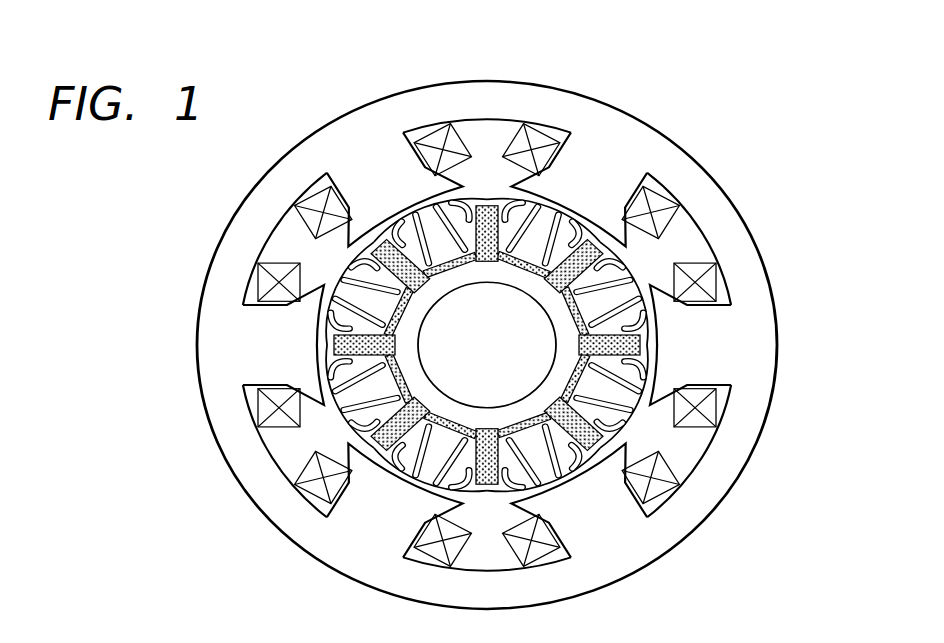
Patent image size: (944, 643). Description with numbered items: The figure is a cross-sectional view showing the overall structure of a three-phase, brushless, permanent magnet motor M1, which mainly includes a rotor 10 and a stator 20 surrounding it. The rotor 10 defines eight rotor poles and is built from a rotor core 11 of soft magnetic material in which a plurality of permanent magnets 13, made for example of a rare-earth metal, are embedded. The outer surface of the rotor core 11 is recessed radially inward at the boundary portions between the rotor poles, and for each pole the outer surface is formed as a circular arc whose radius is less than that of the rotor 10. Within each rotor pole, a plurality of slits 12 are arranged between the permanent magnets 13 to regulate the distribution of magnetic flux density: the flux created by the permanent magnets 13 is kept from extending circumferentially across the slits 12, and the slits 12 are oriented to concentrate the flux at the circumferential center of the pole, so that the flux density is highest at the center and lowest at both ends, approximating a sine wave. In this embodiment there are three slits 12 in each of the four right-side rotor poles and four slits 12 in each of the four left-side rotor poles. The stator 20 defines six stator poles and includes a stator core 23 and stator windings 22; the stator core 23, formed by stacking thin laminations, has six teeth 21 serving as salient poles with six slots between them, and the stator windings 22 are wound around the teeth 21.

The motor M1 is at (796, 76).
The rotor 10 is at (640, 266).
The rotor core 11 is at (640, 372).
The slits 12 is at (630, 418).
The permanent magnets 13 is at (337, 343).
The stator 20 is at (725, 174).
The teeth 21 is at (382, 183).
The stator windings 22 is at (313, 202).
The stator core 23 is at (605, 115).